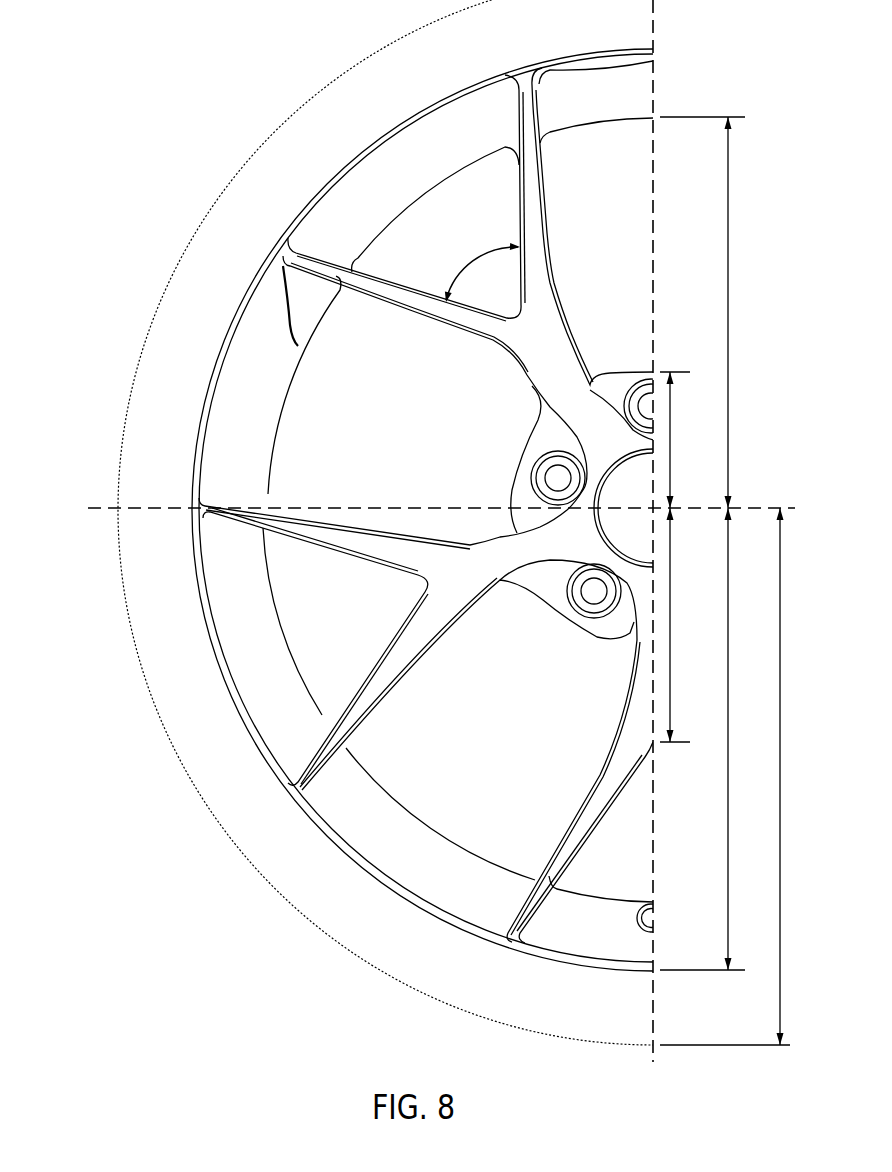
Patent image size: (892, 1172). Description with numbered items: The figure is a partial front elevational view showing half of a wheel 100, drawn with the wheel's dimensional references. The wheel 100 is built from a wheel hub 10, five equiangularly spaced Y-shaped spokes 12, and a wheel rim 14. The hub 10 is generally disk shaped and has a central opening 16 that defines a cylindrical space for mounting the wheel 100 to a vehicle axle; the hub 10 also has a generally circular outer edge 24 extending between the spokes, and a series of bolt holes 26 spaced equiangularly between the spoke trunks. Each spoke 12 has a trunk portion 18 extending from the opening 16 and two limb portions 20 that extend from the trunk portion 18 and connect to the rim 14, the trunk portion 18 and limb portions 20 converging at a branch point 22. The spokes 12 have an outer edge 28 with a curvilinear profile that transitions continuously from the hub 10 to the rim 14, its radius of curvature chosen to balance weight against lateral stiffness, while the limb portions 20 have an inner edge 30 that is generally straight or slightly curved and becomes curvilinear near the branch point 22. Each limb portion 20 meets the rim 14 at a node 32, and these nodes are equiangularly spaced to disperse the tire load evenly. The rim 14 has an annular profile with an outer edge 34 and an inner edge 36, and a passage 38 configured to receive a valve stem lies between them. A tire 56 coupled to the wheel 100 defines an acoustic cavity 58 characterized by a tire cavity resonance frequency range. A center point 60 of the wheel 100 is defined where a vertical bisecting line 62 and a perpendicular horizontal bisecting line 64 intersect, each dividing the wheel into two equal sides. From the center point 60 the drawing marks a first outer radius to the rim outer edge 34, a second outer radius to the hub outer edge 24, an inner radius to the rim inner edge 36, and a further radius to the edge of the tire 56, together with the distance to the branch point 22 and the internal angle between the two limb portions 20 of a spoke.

The wheel 100 is at (146, 49).
The wheel hub 10 is at (597, 637).
The Y-shaped spoke 12 is at (549, 263).
The wheel rim 14 is at (302, 220).
The central opening 16 is at (618, 462).
The trunk portion 18 is at (538, 362).
The limb portion 20 is at (533, 192).
The branch point 22 is at (428, 580).
The outer edge of hub 24 is at (550, 620).
The bolt hole 26 is at (535, 476).
The outer edge of spoke 28 is at (386, 710).
The inner edge of limb portion 30 is at (347, 560).
The node 32 is at (295, 348).
The outer edge of rim 34 is at (425, 918).
The inner edge of rim 36 is at (446, 828).
The passage 38 is at (650, 903).
The tire 56 is at (172, 265).
The acoustic cavity 58 is at (297, 876).
The center point 60 is at (645, 513).
The vertical bisecting line 62 is at (655, 76).
The horizontal bisecting line 64 is at (93, 514).